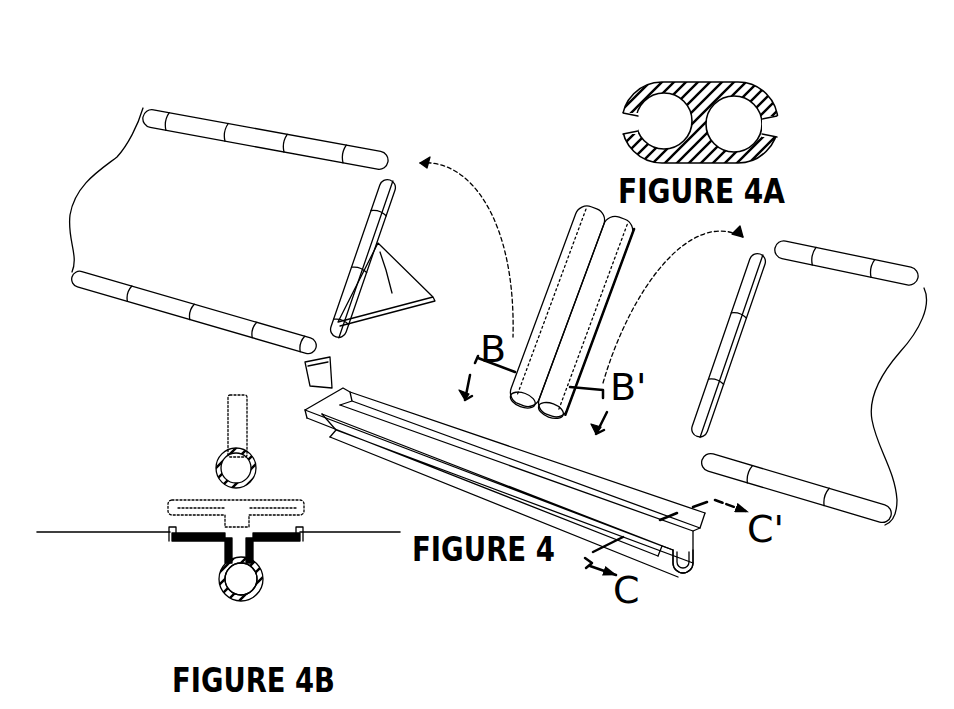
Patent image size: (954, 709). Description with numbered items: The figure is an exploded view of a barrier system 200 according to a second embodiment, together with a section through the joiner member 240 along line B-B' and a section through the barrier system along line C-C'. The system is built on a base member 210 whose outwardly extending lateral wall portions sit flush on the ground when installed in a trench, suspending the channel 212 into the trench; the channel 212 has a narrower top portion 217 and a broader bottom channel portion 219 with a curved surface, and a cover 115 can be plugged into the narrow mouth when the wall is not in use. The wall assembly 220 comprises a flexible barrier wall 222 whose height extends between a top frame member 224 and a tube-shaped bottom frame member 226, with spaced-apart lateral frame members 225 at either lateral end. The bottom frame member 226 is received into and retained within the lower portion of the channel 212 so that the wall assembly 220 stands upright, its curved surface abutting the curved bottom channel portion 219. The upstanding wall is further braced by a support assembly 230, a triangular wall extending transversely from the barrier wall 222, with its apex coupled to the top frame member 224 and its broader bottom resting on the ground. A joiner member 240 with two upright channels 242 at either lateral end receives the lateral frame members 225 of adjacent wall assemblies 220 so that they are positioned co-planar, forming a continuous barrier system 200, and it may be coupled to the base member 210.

In FIG. 4, the barrier system 200 is at (456, 114).
In FIG. 4B, the cover 115 is at (200, 498).
In FIG. 4, the base member 210 is at (700, 535).
In FIG. 4B, the base member 210 is at (186, 540).
In FIG. 4, the channel 212 is at (679, 570).
In FIG. 4B, the channel 212 is at (262, 585).
In FIG. 4B, the narrower top portion 217 is at (253, 550).
In FIG. 4B, the broader bottom channel portion 219 is at (222, 583).
In FIG. 4, the wall assembly 220 is at (164, 160).
In FIG. 4, the barrier wall 222 is at (122, 172).
In FIG. 4, the top frame member 224 is at (229, 132).
In FIG. 4, the lateral frame member 225 is at (385, 187).
In FIG. 4B, the lateral frame member 225 is at (228, 412).
In FIG. 4, the bottom frame member 226 is at (160, 302).
In FIG. 4, the support assembly 230 is at (391, 304).
In FIG. 4, the joiner member 240 is at (576, 265).
In FIG. 4A, the joiner member 240 is at (677, 89).
In FIG. 4A, the upright channel 242 is at (665, 127).